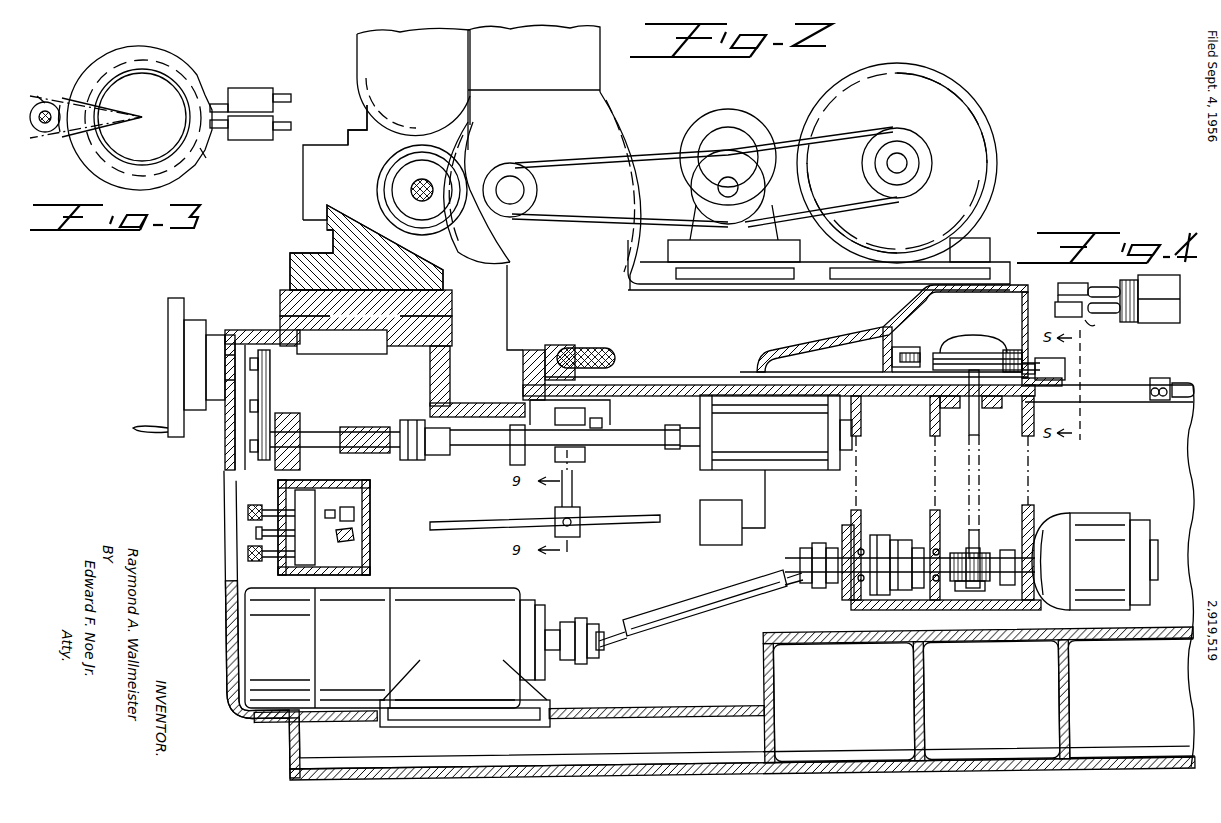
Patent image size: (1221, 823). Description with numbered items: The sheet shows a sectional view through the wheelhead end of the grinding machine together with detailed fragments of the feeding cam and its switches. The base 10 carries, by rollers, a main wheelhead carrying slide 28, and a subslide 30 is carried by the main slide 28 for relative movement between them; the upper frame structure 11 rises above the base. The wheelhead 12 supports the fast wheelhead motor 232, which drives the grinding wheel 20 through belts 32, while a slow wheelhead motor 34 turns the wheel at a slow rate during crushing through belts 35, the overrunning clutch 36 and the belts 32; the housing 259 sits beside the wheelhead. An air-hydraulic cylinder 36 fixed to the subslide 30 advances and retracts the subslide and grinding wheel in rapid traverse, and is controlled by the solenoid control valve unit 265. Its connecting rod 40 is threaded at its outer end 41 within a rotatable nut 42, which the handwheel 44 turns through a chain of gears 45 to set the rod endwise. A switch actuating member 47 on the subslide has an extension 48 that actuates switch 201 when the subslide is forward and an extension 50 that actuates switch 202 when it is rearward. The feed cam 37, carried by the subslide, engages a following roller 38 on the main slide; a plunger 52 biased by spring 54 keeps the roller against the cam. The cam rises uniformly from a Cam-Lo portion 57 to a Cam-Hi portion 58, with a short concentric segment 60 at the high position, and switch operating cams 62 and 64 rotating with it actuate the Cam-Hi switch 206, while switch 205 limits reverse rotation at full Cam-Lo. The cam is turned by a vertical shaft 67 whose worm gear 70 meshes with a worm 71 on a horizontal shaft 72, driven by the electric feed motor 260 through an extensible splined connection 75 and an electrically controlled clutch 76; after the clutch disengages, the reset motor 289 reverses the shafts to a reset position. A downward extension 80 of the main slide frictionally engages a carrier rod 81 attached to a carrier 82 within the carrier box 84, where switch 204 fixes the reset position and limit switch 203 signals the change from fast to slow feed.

In FIG. 2, the base 10 is at (228, 598).
In FIG. 2, the machine frame upper section 11 is at (297, 186).
In FIG. 2, the wheelhead 12 is at (655, 118).
In FIG. 2, the grinding wheel 20 is at (492, 258).
In FIG. 2, the main wheelhead carrying slide 28 is at (900, 332).
In FIG. 2, the subslide 30 is at (884, 396).
In FIG. 2, the belts 32 is at (642, 158).
In FIG. 2, the slow wheelhead motor 34 is at (742, 112).
In FIG. 2, the belts 35 is at (848, 136).
In FIG. 2, the air-hydraulic cylinder 36 is at (914, 165).
In FIG. 2, the feed cam 37 is at (972, 344).
In FIG. 3, the feed cam 37 is at (158, 46).
In FIG. 2, the following roller 38 is at (900, 352).
In FIG. 3, the following roller 38 is at (35, 140).
In FIG. 2, the connecting rod 40 is at (640, 437).
In FIG. 2, the threaded outer end 41 is at (360, 428).
In FIG. 2, the rotatable nut 42 is at (320, 447).
In FIG. 2, the handwheel 44 is at (168, 392).
In FIG. 2, the chain of gears 45 is at (272, 392).
In FIG. 2, the switch actuating member 47 is at (537, 404).
In FIG. 2, the extension 48 is at (604, 424).
In FIG. 2, the extension 50 is at (518, 455).
In FIG. 2, the plunger 52 is at (566, 346).
In FIG. 2, the spring 54 is at (606, 352).
In FIG. 3, the Cam-Lo portion 57 is at (73, 95).
In FIG. 3, the Cam-Hi portion 58 is at (62, 138).
In FIG. 3, the short concentric segment 60 is at (41, 88).
In FIG. 3, the switch operating cam 62 is at (208, 100).
In FIG. 4, the switch operating cam 62 is at (1062, 290).
In FIG. 3, the switch operating cam 64 is at (202, 150).
In FIG. 4, the switch operating cam 64 is at (1078, 316).
In FIG. 2, the vertical shaft 67 is at (980, 540).
In FIG. 2, the worm gear 70 is at (955, 553).
In FIG. 2, the worm 71 is at (960, 583).
In FIG. 2, the horizontal shaft 72 is at (1012, 584).
In FIG. 2, the extensible splined connection 75 is at (700, 590).
In FIG. 2, the electrically controlled clutch 76 is at (880, 536).
In FIG. 2, the downward extension 80 is at (578, 508).
In FIG. 2, the carrier rod 81 is at (485, 525).
In FIG. 2, the carrier 82 is at (310, 552).
In FIG. 2, the carrier box 84 is at (355, 484).
In FIG. 2, the switch 201 is at (586, 412).
In FIG. 2, the switch 202 is at (586, 452).
In FIG. 2, the limit switch 203 is at (352, 536).
In FIG. 2, the switch 204 is at (352, 512).
In FIG. 3, the switch 205 is at (260, 137).
In FIG. 4, the switch 205 is at (1168, 318).
In FIG. 3, the Cam-Hi switch 206 is at (260, 109).
In FIG. 4, the Cam-Hi switch 206 is at (1058, 360).
In FIG. 2, the fast wheelhead motor 232 is at (900, 107).
In FIG. 2, the drive motor 259 is at (416, 75).
In FIG. 2, the electric feed motor 260 is at (445, 628).
In FIG. 2, the solenoid control valve unit 265 is at (722, 545).
In FIG. 2, the reset motor 289 is at (1110, 560).